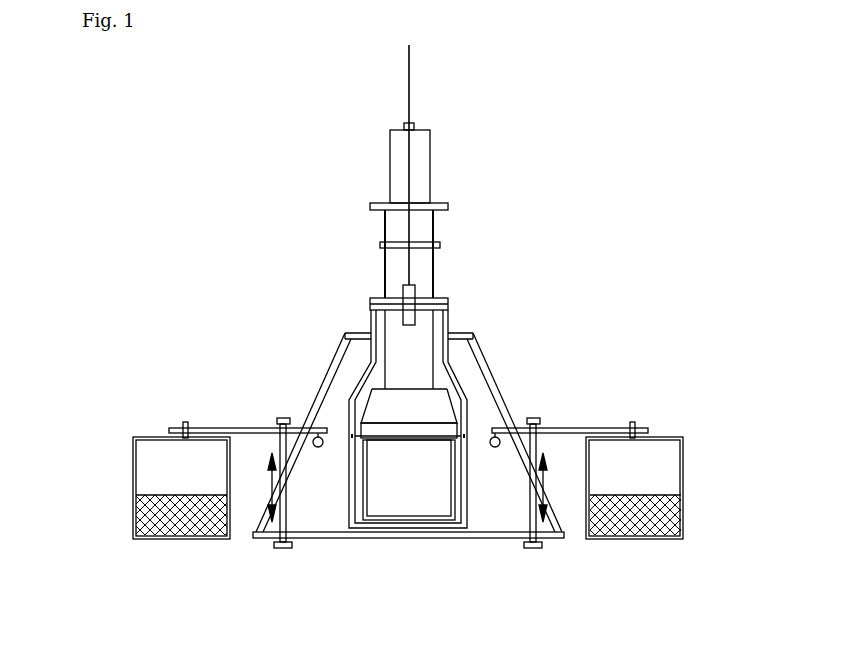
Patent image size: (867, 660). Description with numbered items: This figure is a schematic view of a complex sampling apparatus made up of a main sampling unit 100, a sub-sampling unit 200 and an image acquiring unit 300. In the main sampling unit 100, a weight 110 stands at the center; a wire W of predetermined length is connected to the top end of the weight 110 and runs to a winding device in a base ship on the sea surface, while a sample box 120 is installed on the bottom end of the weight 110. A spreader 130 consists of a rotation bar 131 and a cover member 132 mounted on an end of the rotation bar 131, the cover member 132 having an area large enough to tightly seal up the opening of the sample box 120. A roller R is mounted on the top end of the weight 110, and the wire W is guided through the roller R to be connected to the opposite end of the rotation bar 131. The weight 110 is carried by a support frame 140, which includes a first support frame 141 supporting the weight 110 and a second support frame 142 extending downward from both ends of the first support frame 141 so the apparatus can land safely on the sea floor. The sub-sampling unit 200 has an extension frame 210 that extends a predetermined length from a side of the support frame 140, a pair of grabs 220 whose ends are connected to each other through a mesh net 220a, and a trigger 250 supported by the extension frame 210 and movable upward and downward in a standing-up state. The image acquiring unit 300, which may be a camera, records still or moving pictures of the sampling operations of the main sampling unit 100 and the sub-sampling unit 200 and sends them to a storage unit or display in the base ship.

The wire W is at (410, 83).
The roller R is at (414, 125).
The main sampling unit 100 is at (519, 234).
The weight 110 is at (422, 273).
The sample box 120 is at (447, 485).
The spreader 130 is at (534, 416).
The rotation bar 131 is at (448, 341).
The cover member 132 is at (473, 448).
The support frame 140 is at (346, 450).
The first support frame 141 is at (340, 368).
The second support frame 142 is at (337, 540).
The sub-sampling unit 200 is at (407, 498).
The extension frame 210 is at (235, 430).
The grabs 220 is at (345, 488).
The mesh net 220a is at (145, 517).
The trigger 250 is at (283, 528).
The image acquiring unit 300 is at (316, 453).